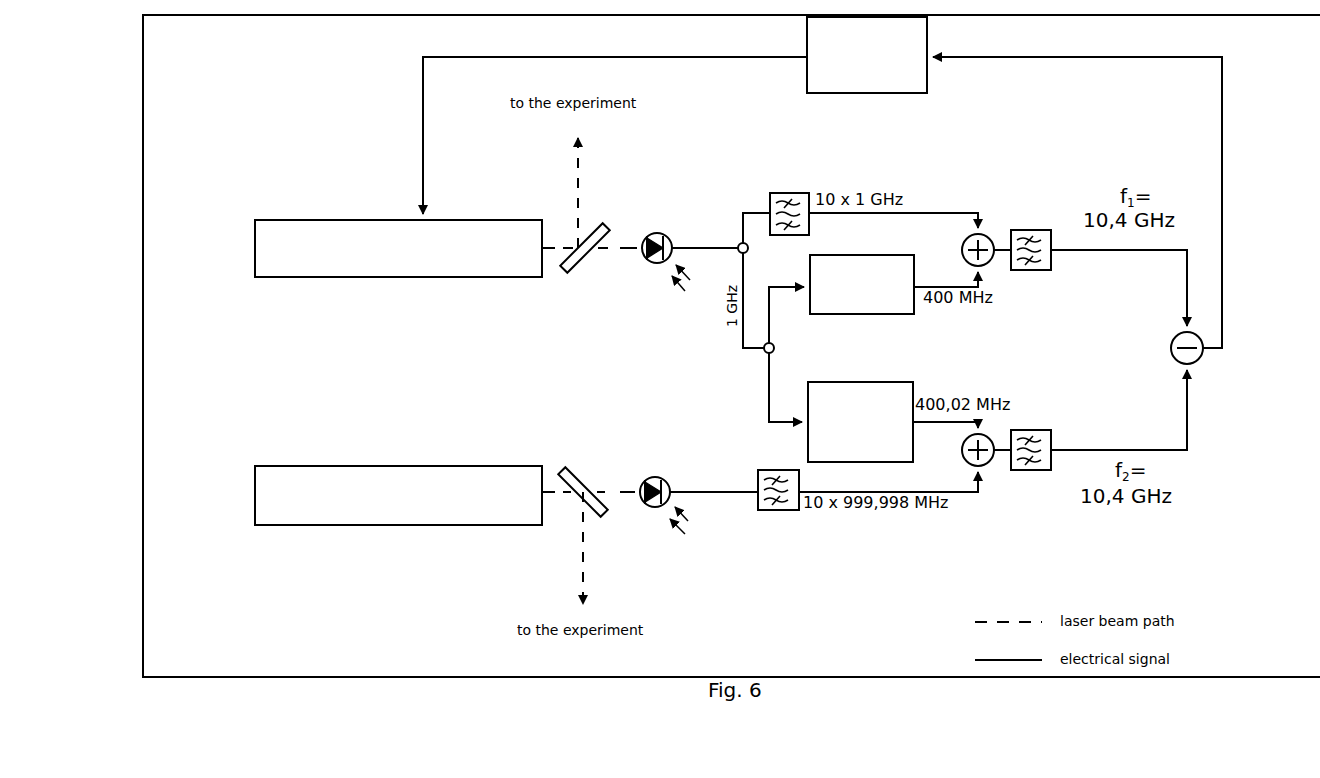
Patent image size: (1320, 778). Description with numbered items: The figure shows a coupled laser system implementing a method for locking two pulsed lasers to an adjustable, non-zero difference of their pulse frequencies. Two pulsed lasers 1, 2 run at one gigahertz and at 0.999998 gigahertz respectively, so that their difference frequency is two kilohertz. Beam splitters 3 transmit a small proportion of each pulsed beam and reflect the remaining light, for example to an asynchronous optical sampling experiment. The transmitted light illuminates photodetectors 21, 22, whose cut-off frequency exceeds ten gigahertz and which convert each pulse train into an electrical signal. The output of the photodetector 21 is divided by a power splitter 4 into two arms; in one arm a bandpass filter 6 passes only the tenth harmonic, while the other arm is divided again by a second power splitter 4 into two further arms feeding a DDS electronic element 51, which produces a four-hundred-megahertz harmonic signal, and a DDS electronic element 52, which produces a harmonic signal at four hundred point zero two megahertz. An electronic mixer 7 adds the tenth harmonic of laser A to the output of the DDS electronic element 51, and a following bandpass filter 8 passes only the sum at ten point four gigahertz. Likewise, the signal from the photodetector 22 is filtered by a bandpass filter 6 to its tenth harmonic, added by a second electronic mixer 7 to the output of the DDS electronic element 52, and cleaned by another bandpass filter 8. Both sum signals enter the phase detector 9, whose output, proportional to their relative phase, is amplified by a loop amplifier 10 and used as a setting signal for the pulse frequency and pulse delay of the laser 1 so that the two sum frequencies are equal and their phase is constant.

The pulsed laser 1 is at (333, 206).
The pulsed laser 2 is at (354, 450).
The beam splitter 3 is at (572, 289).
The power splitter 4 is at (732, 234).
The bandpass filter 6 is at (783, 180).
The electronic mixer 7 is at (993, 222).
The bandpass filter 8 is at (1025, 284).
The phase detector 9 is at (1162, 350).
The loop amplifier 10 is at (867, 55).
The photodetector 21 is at (655, 270).
The photodetector 22 is at (651, 465).
The DDS electronic element 51 is at (855, 322).
The DDS electronic element 52 is at (890, 370).